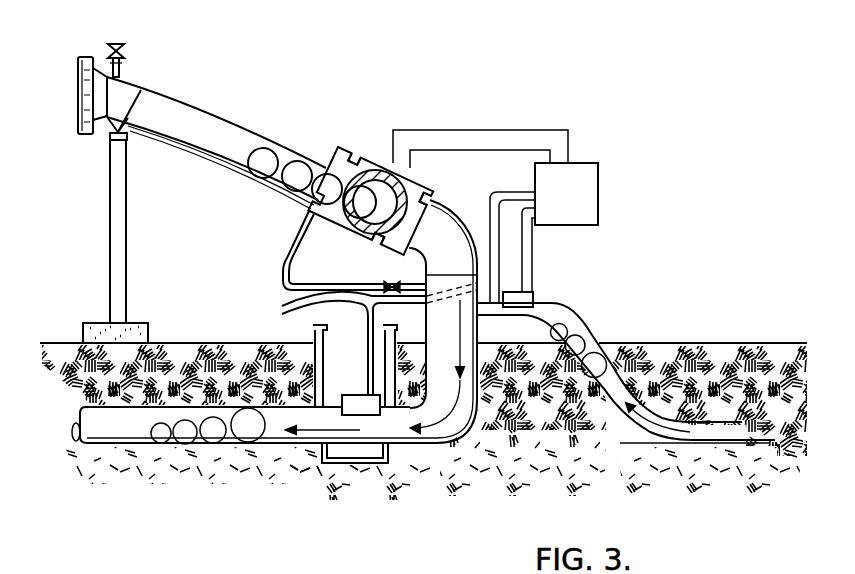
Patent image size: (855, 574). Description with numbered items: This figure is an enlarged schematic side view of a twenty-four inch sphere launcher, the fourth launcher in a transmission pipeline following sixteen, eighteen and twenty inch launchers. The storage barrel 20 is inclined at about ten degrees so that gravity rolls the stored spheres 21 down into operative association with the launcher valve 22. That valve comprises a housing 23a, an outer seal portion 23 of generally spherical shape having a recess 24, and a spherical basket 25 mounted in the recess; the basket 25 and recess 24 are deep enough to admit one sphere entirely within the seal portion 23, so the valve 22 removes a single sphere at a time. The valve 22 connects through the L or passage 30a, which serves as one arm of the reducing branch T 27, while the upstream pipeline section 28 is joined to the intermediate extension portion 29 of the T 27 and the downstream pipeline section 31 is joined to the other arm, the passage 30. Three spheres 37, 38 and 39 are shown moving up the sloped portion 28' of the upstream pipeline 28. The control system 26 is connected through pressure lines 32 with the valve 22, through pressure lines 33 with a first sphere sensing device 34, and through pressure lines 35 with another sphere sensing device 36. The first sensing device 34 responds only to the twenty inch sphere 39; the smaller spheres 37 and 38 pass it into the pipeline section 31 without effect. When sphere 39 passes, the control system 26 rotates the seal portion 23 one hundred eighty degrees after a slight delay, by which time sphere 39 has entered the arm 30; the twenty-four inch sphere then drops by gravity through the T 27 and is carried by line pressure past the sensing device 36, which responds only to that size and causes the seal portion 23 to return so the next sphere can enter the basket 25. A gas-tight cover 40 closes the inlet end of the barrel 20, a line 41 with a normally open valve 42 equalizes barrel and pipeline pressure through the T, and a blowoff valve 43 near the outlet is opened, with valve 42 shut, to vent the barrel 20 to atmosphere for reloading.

The storage barrel 20 is at (168, 96).
The spheres 21 is at (267, 150).
The launcher valve 22 is at (373, 158).
The outer seal portion 23 is at (401, 168).
The housing 23a is at (381, 163).
The recess 24 is at (407, 182).
The basket 25 is at (370, 242).
The control system 26 is at (588, 175).
The reducing branch T 27 is at (457, 438).
The upstream pipeline section 28 is at (626, 364).
The sloped portion 28' is at (681, 445).
The intermediate extension portion 29 is at (482, 345).
The reducing L or passage 30 is at (430, 445).
The L or passage 30a is at (457, 212).
The downstream pipeline section 31 is at (287, 448).
The pressure lines 32 is at (582, 128).
The pressure lines 33 is at (527, 253).
The first sphere sensing device 34 is at (533, 294).
The pressure lines 35 is at (284, 308).
The sphere sensing device 36 is at (348, 404).
The sphere 37 is at (160, 443).
The sphere 38 is at (185, 444).
The sphere 39 is at (213, 443).
The cover 40 is at (83, 134).
The line 41 is at (281, 244).
The valve 42 is at (392, 281).
The blowoff valve 43 is at (122, 47).